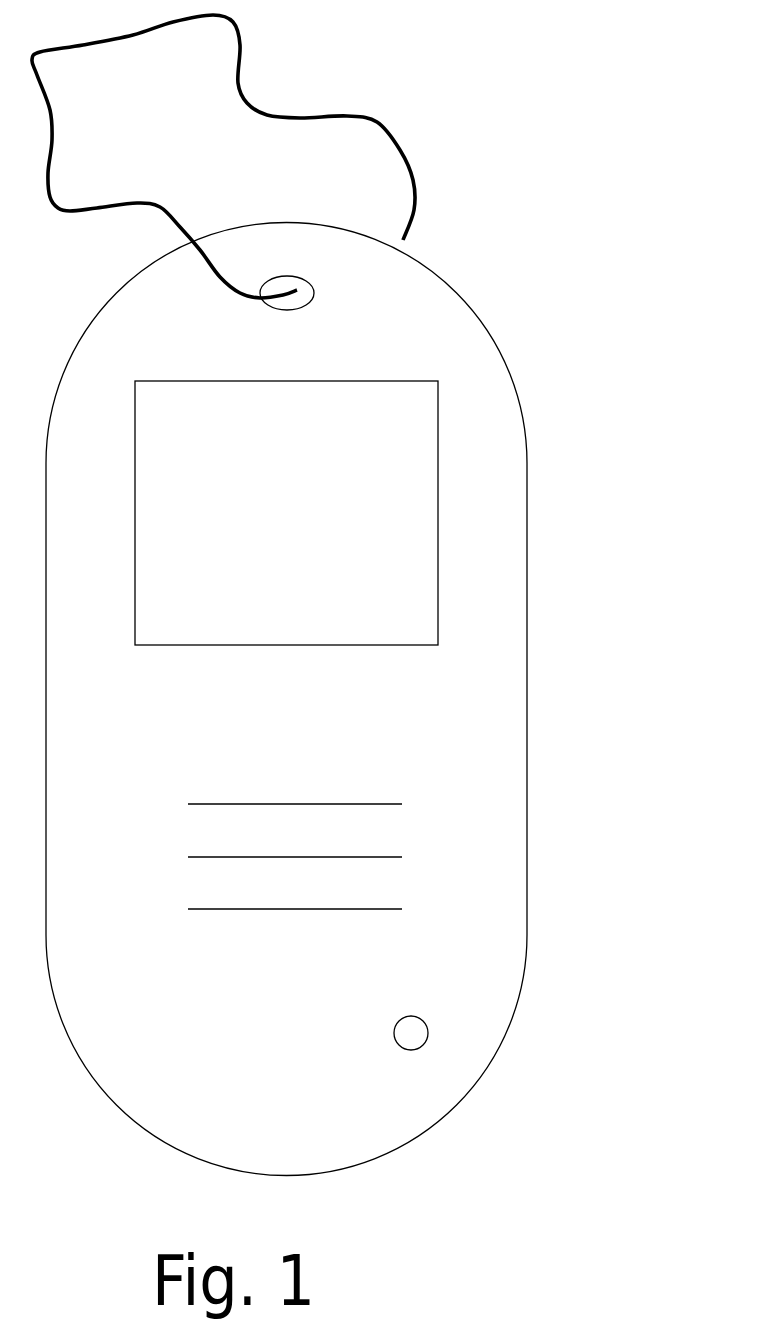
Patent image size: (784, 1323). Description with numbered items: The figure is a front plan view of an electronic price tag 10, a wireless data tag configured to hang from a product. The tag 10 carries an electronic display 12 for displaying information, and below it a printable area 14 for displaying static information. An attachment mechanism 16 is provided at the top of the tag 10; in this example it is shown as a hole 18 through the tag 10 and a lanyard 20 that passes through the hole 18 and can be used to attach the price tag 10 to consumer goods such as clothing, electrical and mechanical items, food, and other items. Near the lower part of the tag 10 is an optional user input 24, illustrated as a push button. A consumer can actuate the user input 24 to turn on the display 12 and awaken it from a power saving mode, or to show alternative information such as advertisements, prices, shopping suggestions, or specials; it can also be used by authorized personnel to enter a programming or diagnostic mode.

The electronic price tag 10 is at (605, 330).
The electronic display 12 is at (402, 468).
The printable area 14 is at (367, 840).
The attachment mechanism 16 is at (276, 155).
The hole 18 is at (313, 292).
The lanyard 20 is at (387, 117).
The user input 24 is at (420, 1025).